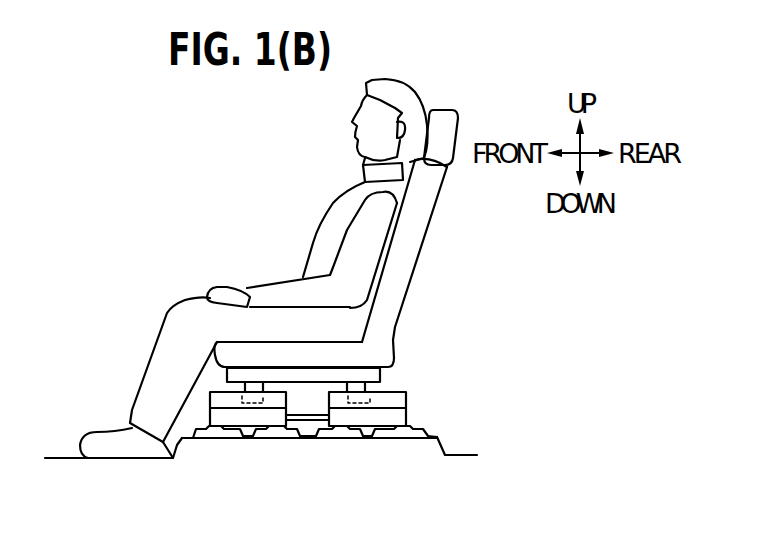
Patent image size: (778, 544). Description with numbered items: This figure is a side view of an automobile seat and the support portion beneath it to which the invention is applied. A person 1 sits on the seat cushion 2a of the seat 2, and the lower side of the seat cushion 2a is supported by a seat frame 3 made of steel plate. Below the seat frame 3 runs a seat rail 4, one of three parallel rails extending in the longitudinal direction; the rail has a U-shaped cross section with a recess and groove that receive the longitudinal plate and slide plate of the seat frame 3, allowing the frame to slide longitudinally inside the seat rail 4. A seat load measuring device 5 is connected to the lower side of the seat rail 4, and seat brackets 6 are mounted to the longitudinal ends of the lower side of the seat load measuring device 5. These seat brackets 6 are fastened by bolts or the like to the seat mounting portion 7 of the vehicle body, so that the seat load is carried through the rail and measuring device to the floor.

The person 1 is at (323, 222).
The seat 2 is at (430, 218).
The seat cushion 2a is at (327, 353).
The seat frame 3 is at (385, 371).
The seat rail 4 is at (407, 395).
The seat load measuring device 5 is at (407, 415).
The seat bracket 6 is at (392, 440).
The seat mounting portion 7 is at (430, 434).